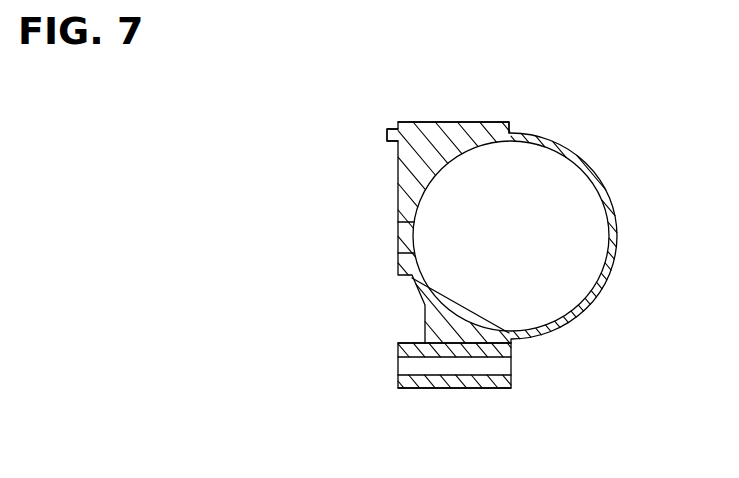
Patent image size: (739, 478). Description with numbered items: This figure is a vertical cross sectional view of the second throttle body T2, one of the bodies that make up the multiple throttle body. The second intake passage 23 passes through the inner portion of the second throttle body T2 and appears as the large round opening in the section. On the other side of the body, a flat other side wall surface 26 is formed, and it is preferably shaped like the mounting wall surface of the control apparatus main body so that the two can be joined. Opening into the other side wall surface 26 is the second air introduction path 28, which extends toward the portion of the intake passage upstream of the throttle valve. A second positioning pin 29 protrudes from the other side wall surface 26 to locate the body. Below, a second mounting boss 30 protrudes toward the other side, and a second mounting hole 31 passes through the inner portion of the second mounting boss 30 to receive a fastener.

The second intake passage 23 is at (607, 210).
The other side wall surface 26 is at (398, 177).
The second air introduction path 28 is at (398, 236).
The second positioning pin 29 is at (387, 134).
The second mounting boss 30 is at (440, 388).
The second mounting hole 31 is at (467, 388).
The second throttle body T2 is at (473, 118).